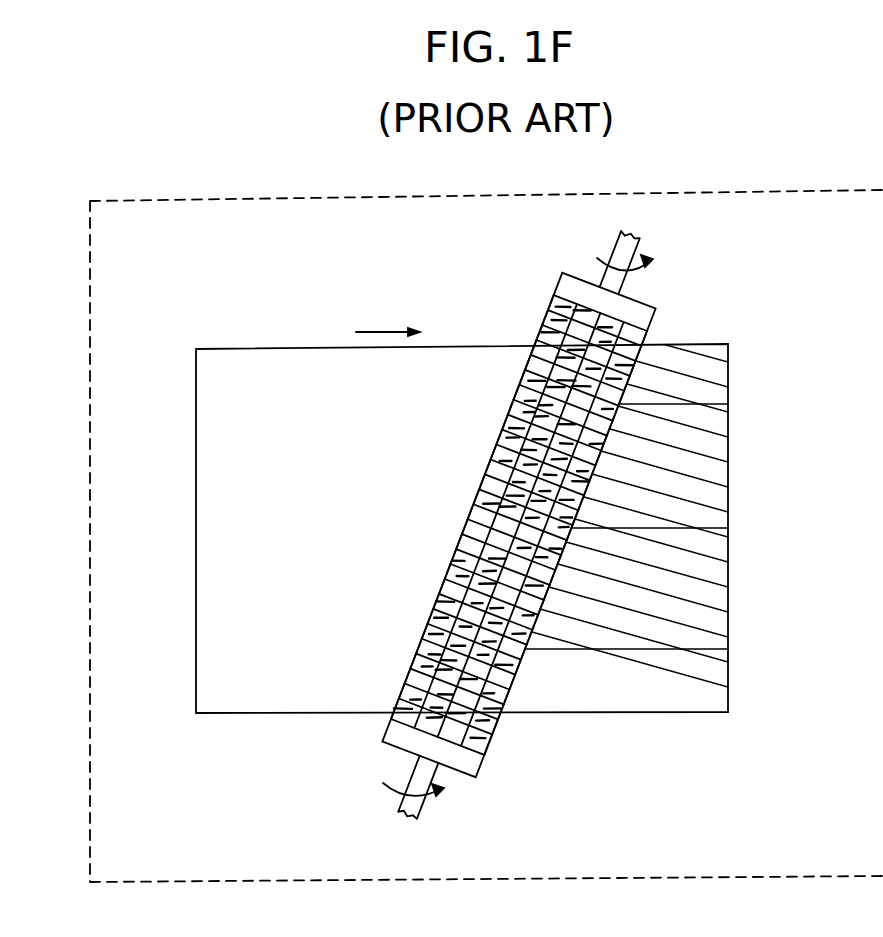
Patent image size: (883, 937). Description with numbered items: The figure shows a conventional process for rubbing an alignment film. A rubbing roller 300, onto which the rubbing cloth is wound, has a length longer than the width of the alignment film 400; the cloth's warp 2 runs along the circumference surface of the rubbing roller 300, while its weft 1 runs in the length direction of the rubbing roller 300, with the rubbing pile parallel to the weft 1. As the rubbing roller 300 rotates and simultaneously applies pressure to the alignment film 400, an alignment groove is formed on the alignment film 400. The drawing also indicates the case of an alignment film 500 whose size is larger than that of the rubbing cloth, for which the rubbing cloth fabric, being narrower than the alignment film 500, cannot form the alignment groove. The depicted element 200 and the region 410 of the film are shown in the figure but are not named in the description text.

The alignment film 500 is at (724, 192).
The alignment film 400 is at (298, 348).
The coated region 410 is at (706, 406).
The rubbing roller 300 is at (562, 280).
The roller body 200 is at (540, 337).
The weft 1 is at (408, 672).
The warp 2 is at (397, 700).